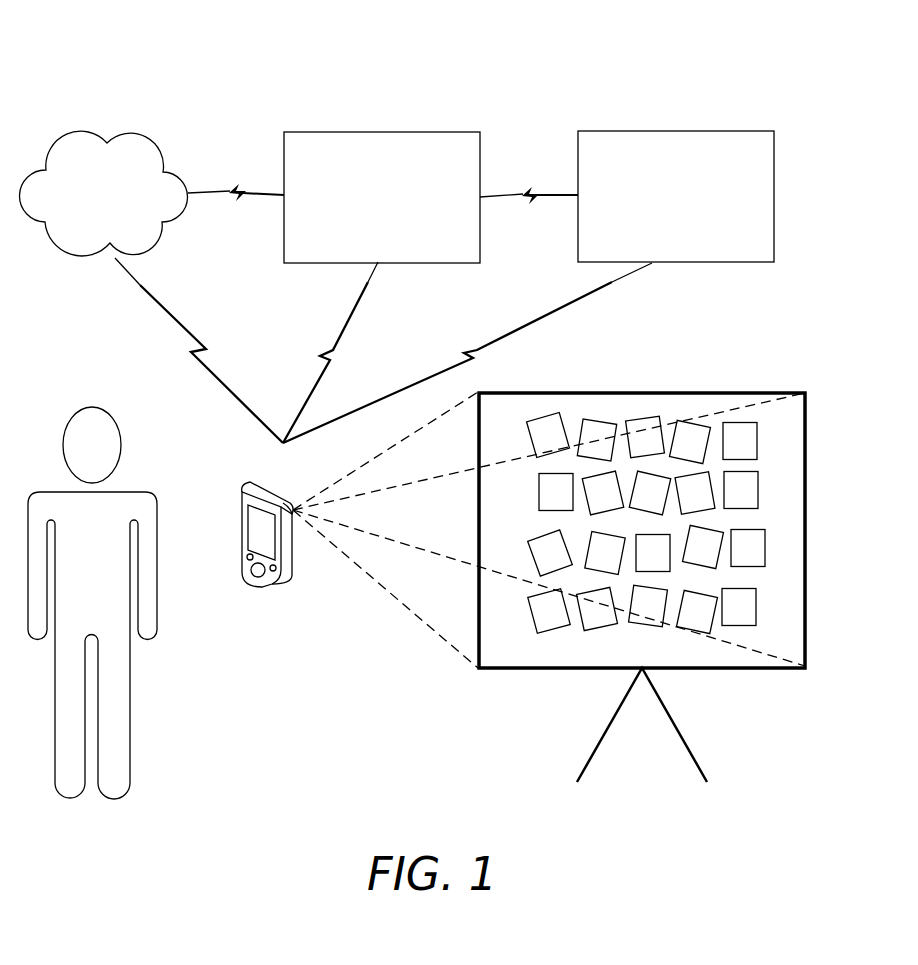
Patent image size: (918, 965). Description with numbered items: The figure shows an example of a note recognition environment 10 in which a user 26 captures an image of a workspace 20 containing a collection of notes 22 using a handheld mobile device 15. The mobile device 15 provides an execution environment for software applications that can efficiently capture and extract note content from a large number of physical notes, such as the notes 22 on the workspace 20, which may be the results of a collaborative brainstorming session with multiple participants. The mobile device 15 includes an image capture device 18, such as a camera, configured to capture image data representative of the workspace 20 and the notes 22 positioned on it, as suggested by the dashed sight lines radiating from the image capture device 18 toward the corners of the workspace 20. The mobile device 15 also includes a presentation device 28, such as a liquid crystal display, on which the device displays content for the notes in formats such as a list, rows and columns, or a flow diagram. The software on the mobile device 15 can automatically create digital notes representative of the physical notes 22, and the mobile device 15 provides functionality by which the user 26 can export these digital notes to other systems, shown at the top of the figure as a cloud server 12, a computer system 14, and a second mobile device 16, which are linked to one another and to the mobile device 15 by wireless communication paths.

The note recognition environment 10 is at (158, 52).
The cloud server 12 is at (92, 229).
The computer system 14 is at (365, 244).
The mobile device 15 is at (241, 523).
The mobile device 16 is at (660, 245).
The image capture device 18 is at (290, 505).
The workspace 20 is at (630, 659).
The notes 22 is at (766, 440).
The user 26 is at (157, 605).
The presentation device 28 is at (260, 537).